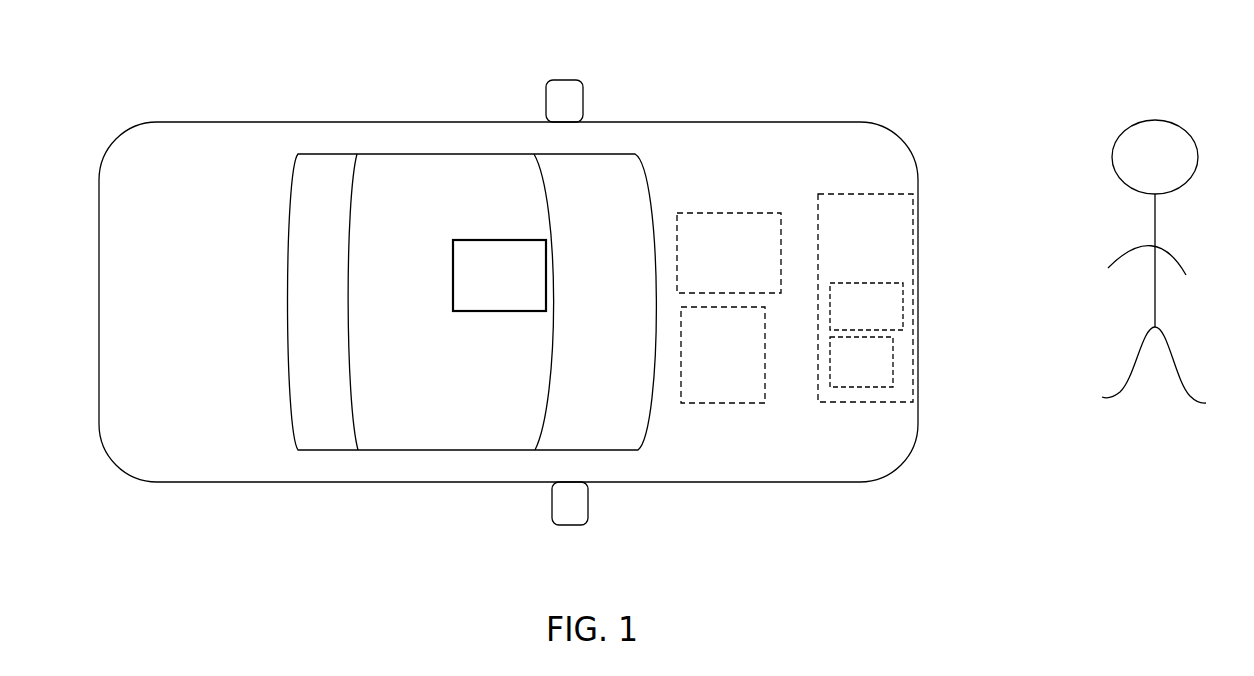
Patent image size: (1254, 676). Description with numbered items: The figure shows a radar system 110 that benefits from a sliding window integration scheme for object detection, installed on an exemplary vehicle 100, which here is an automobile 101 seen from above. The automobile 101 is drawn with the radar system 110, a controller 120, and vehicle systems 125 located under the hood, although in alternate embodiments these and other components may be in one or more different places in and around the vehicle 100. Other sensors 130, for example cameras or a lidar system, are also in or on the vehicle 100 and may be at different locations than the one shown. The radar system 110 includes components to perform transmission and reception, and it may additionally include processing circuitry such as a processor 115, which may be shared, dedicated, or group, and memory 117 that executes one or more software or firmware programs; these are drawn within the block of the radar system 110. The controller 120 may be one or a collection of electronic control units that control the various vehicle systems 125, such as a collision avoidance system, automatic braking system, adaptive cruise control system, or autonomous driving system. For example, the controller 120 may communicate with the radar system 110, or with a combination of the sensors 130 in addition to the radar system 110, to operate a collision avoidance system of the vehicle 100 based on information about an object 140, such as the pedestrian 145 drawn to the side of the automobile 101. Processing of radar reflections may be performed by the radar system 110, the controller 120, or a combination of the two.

The vehicle 100 is at (197, 122).
The automobile 101 is at (413, 256).
The radar system 110 is at (842, 261).
The processor 115 is at (866, 306).
The memory 117 is at (861, 362).
The controller 120 is at (703, 281).
The vehicle systems 125 is at (698, 391).
The sensors 130 is at (475, 306).
The object 140 is at (1075, 92).
The pedestrian 145 is at (1137, 170).